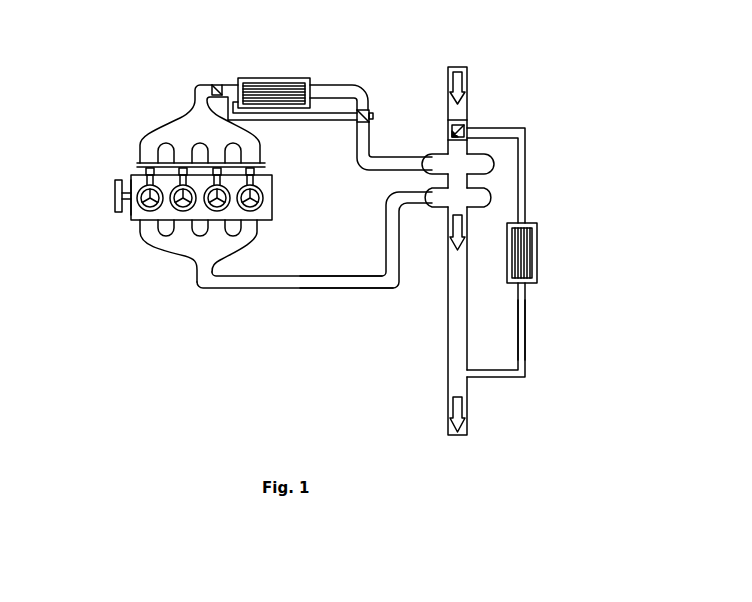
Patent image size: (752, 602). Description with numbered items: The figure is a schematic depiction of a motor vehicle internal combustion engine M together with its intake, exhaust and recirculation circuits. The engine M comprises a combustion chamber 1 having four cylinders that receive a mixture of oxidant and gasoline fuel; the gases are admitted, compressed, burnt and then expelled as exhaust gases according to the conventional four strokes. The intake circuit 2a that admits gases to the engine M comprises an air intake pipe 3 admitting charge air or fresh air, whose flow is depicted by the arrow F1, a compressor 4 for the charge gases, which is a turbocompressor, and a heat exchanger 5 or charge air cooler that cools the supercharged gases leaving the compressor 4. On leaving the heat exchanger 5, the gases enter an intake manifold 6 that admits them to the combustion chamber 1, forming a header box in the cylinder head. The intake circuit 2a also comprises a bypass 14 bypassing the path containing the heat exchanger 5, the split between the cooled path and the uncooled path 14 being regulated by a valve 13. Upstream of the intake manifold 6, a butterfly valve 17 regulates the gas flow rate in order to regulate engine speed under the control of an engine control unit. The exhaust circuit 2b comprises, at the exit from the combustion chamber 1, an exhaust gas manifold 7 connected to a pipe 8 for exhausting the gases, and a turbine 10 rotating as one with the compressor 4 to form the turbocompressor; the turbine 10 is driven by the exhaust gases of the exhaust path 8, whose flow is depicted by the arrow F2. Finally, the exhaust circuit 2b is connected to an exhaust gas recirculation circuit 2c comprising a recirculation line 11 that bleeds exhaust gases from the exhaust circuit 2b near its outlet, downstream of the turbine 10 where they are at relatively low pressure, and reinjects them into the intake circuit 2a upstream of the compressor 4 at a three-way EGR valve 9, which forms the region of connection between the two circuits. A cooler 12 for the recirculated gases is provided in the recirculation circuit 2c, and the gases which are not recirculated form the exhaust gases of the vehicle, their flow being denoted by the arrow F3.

The combustion chamber 1 is at (128, 170).
The intake circuit 2a is at (358, 81).
The exhaust circuit 2b is at (382, 298).
The exhaust gas recirculation circuit 2c is at (530, 355).
The air intake pipe 3 is at (468, 105).
The compressor 4 is at (482, 165).
The heat exchanger 5 is at (265, 90).
The intake manifold 6 is at (150, 131).
The exhaust gas manifold 7 is at (173, 253).
The exhaust pipe 8 is at (247, 284).
The EGR valve 9 is at (470, 127).
The turbine 10 is at (487, 200).
The recirculation line 11 is at (525, 330).
The cooler 12 is at (522, 262).
The valve 13 is at (373, 125).
The bypass 14 is at (318, 122).
The butterfly valve 17 is at (216, 85).
The charge air flow arrow F1 is at (460, 80).
The exhaust gas flow arrow F2 is at (452, 225).
The vehicle exhaust flow arrow F3 is at (452, 400).
The internal combustion engine M is at (121, 228).